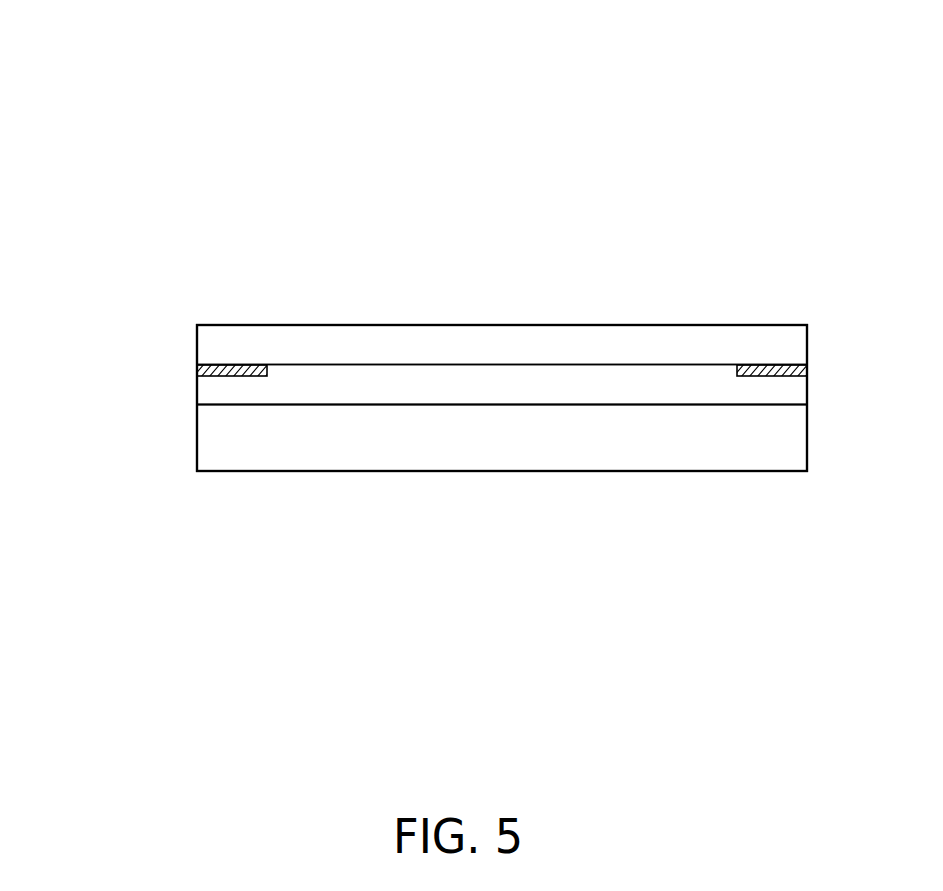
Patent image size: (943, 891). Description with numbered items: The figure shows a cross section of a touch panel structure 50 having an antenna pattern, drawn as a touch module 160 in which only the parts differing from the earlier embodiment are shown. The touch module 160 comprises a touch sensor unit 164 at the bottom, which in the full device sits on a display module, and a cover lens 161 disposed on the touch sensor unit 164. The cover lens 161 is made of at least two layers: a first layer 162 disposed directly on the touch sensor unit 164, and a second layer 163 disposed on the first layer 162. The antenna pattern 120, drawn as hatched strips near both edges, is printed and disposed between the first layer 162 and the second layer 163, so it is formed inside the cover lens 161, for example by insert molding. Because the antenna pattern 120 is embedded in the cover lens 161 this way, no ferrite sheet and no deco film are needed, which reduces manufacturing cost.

The touch panel structure 50 is at (698, 100).
The antenna pattern 120 is at (768, 363).
The touch module 160 is at (817, 325).
The cover lens 161 is at (127, 317).
The first layer 162 is at (210, 395).
The second layer 163 is at (210, 341).
The touch sensor unit 164 is at (693, 461).